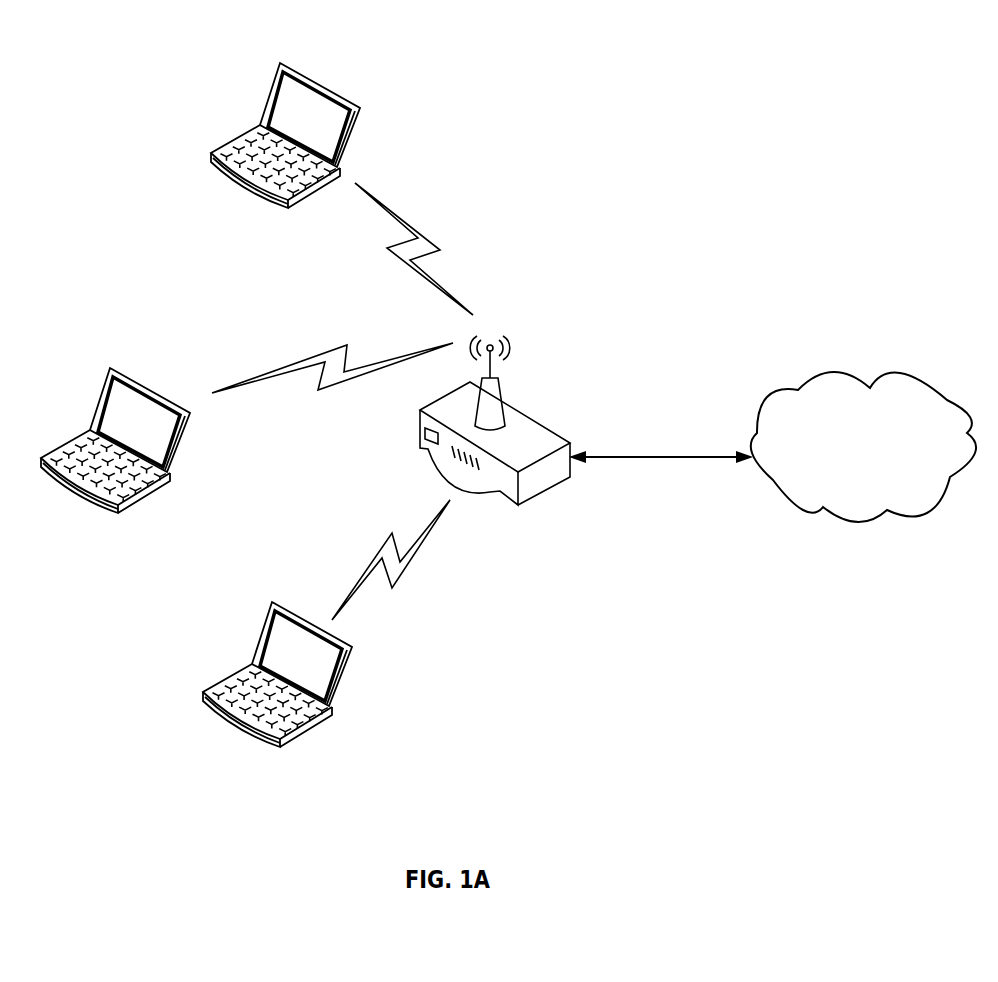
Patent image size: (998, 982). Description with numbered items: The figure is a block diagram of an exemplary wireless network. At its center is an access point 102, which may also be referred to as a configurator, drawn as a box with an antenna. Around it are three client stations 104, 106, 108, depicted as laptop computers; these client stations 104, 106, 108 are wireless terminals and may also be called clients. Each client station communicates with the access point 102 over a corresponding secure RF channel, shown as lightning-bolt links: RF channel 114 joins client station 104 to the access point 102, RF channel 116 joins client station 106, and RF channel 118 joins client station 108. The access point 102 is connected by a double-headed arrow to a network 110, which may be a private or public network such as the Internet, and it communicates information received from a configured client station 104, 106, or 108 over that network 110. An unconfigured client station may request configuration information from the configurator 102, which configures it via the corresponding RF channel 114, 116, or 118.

The access point 102 is at (543, 422).
The client station 104 is at (270, 80).
The client station 106 is at (100, 378).
The client station 108 is at (261, 604).
The network 110 is at (803, 378).
The RF channel 114 is at (401, 215).
The RF channel 116 is at (318, 357).
The RF channel 118 is at (378, 555).